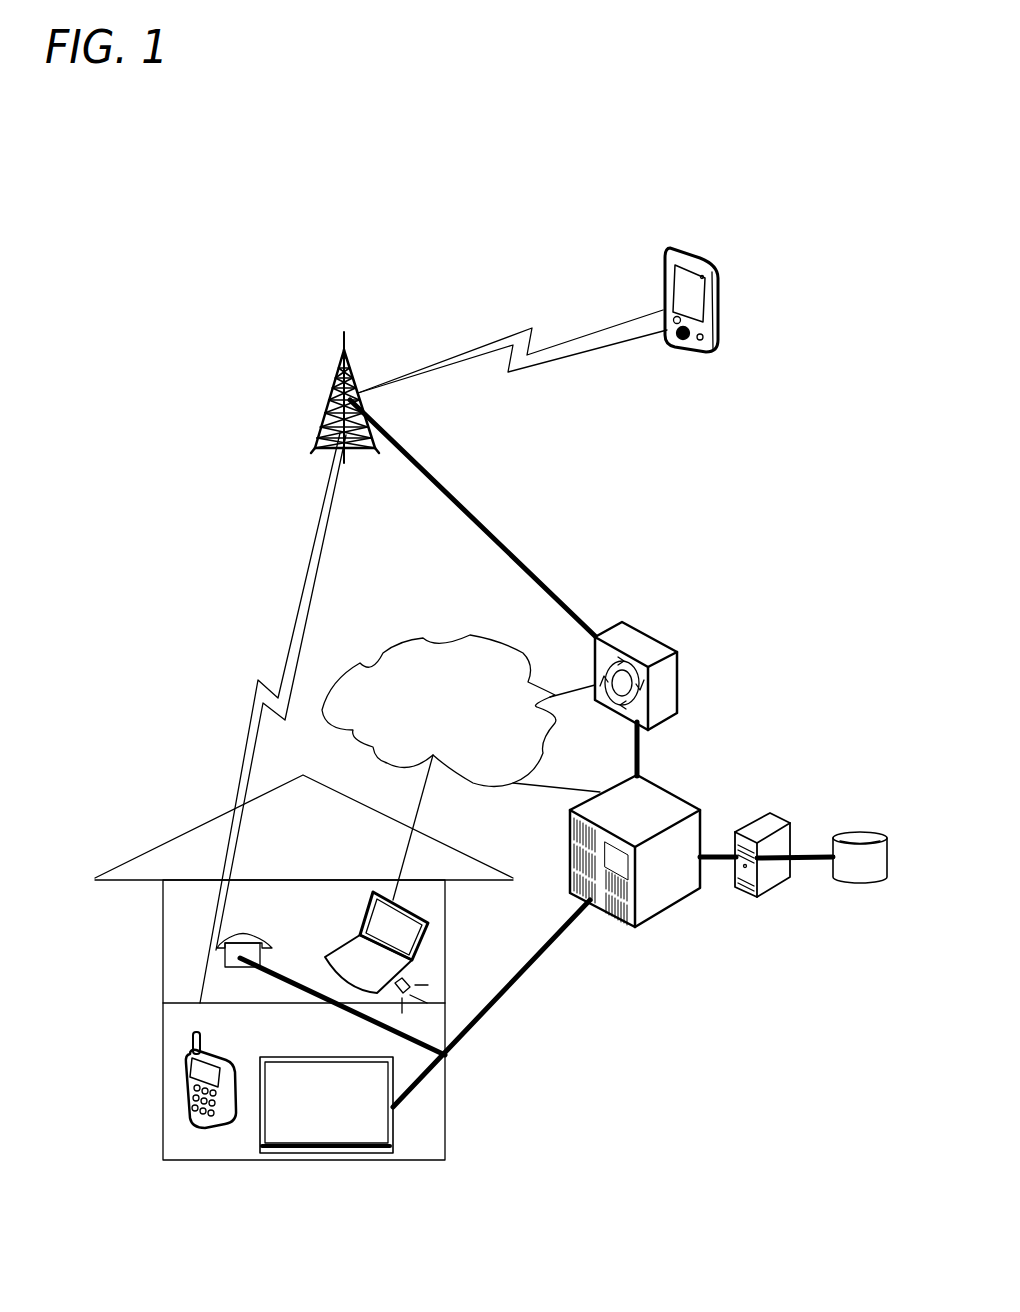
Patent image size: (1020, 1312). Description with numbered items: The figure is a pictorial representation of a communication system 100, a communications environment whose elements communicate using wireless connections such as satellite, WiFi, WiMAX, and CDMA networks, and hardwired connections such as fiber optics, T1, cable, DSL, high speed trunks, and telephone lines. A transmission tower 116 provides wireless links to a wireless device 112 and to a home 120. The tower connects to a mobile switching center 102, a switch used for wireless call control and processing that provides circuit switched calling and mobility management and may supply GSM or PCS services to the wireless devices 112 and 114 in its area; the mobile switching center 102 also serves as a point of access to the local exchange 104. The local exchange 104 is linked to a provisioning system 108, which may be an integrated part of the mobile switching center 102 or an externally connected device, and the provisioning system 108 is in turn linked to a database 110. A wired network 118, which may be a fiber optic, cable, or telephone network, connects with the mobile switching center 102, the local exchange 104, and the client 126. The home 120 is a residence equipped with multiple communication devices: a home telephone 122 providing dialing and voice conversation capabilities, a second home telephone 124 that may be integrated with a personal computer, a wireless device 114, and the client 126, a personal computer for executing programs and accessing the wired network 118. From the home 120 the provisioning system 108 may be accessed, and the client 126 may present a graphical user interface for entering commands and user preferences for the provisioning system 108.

The communication system 100 is at (162, 253).
The mobile switching center 102 is at (618, 620).
The local exchange 104 is at (642, 927).
The provisioning system 108 is at (785, 880).
The database 110 is at (840, 830).
The wireless device 112 is at (718, 268).
The wireless device 114 is at (187, 1115).
The transmission tower 116 is at (323, 434).
The wired network 118 is at (420, 737).
The home 120 is at (162, 833).
The home telephone 122 is at (200, 977).
The home telephone 124 is at (378, 1125).
The client 126 is at (433, 960).